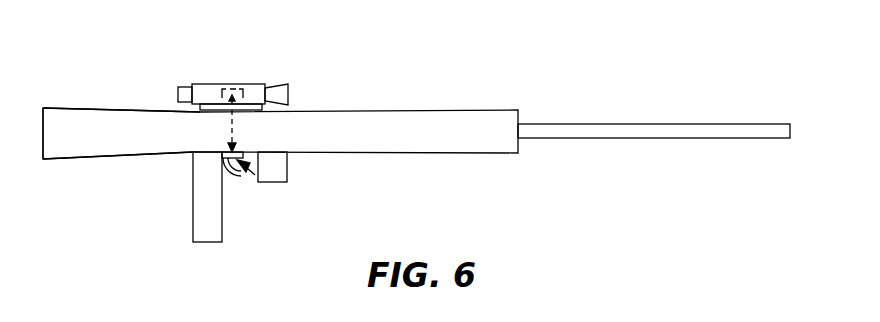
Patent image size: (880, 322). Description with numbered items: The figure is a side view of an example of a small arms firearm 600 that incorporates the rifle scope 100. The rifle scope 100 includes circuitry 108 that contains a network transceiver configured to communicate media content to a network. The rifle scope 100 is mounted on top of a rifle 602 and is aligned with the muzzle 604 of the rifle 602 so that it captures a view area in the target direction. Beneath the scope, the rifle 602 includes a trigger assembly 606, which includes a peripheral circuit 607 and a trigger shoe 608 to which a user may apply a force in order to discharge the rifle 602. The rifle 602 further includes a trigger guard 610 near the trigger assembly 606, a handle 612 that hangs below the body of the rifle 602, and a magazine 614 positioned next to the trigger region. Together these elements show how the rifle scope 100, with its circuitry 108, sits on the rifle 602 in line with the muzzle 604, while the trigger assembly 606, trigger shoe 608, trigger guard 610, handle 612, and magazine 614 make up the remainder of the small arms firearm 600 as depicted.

The small arms firearm 600 is at (113, 22).
The rifle scope 100 is at (211, 84).
The circuitry 108 is at (235, 88).
The rifle 602 is at (131, 108).
The muzzle 604 is at (628, 124).
The trigger assembly 606 is at (229, 153).
The peripheral circuit 607 is at (255, 175).
The trigger shoe 608 is at (232, 177).
The trigger guard 610 is at (229, 178).
The handle 612 is at (192, 195).
The magazine 614 is at (280, 160).